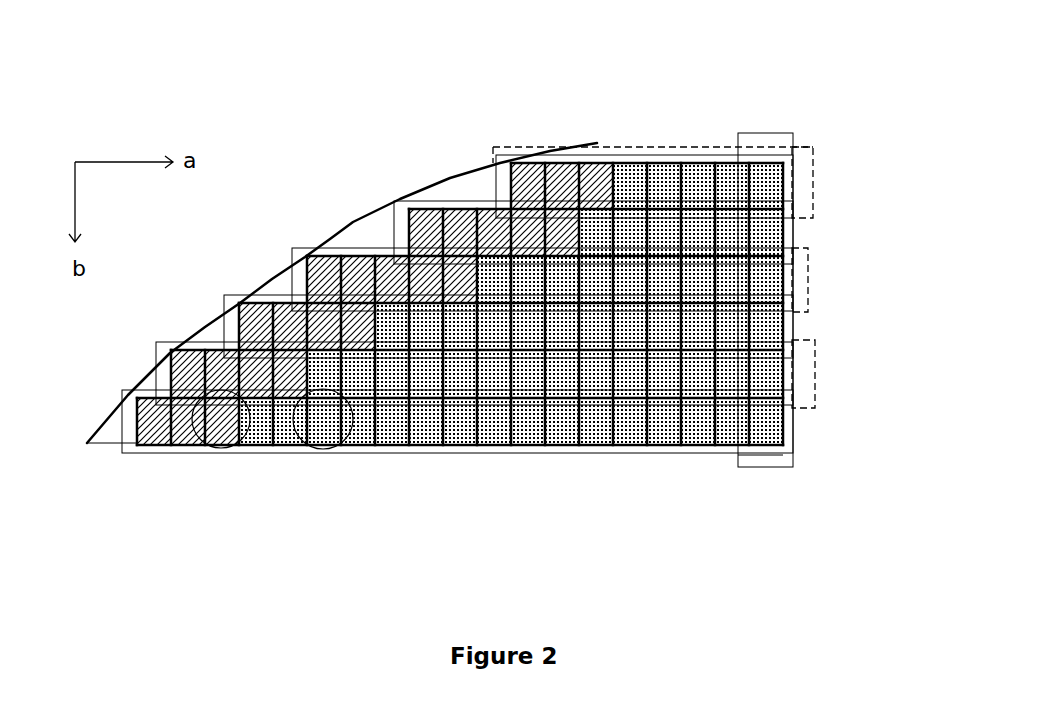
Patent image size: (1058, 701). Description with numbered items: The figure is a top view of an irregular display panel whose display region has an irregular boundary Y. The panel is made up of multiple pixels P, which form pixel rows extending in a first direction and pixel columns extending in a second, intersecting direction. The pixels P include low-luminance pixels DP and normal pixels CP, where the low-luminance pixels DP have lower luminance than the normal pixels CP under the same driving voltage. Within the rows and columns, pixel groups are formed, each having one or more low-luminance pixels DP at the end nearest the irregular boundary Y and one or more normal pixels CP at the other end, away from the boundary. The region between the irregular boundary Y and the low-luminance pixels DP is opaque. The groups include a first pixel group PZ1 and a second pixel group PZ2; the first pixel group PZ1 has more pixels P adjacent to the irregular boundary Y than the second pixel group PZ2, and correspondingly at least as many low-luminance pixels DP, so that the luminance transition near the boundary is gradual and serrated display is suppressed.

The irregular boundary Y is at (355, 221).
The first pixel group PZ1 is at (810, 265).
The second pixel group PZ2 is at (815, 360).
The low-luminance pixel DP is at (215, 452).
The normal pixel CP is at (316, 452).
The pixel P is at (227, 545).